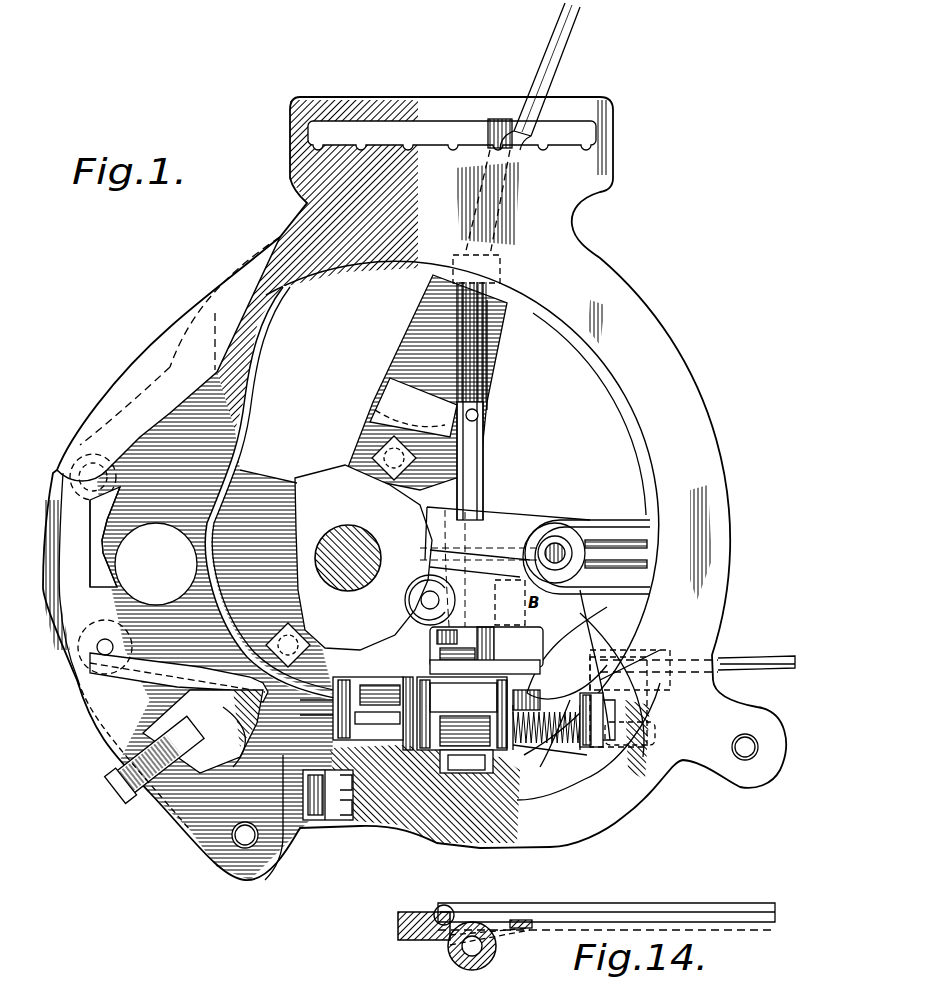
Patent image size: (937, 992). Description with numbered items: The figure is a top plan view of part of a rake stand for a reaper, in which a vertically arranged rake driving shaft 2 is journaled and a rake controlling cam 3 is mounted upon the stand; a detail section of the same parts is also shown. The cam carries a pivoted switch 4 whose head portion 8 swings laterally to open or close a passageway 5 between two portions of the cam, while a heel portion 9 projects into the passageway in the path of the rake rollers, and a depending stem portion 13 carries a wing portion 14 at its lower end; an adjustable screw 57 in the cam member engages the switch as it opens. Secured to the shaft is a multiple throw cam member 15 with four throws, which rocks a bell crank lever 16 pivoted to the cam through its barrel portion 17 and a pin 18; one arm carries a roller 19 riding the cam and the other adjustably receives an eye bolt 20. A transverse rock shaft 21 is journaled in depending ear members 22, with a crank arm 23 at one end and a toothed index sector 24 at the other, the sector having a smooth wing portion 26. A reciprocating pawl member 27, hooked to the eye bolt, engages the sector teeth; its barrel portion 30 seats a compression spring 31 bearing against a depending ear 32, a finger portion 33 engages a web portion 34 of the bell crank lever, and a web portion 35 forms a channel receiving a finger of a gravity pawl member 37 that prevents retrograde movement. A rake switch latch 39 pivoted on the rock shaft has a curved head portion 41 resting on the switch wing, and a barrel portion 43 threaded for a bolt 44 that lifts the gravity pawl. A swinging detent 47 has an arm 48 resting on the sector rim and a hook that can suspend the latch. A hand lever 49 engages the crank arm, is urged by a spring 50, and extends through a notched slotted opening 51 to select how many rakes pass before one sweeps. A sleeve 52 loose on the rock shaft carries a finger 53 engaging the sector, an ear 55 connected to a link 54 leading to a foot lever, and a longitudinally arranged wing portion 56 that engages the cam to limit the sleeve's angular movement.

In FIG. 1, the rake driving shaft 2 is at (338, 527).
In FIG. 1, the rake controlling cam 3 is at (705, 425).
In FIG. 1, the pivoted switch 4 is at (100, 690).
In FIG. 1, the passageway 5 is at (140, 635).
In FIG. 1, the head portion 8 is at (140, 690).
In FIG. 1, the heel portion 9 is at (103, 555).
In FIG. 1, the depending stem portion 13 is at (181, 703).
In FIG. 1, the wing portion 14 is at (204, 715).
In FIG. 1, the multiple throw cam member 15 is at (320, 490).
In FIG. 1, the bell crank lever 16 is at (598, 612).
In FIG. 1, the barrel portion 17 is at (599, 520).
In FIG. 1, the pin 18 is at (548, 525).
In FIG. 1, the roller 19 is at (408, 575).
In FIG. 1, the eye bolt 20 is at (668, 744).
In FIG. 1, the rock shaft 21 is at (484, 452).
In FIG. 14, the rock shaft 21 is at (462, 960).
In FIG. 1, the depending ear members 22 is at (520, 300).
In FIG. 1, the crank arm 23 is at (488, 132).
In FIG. 1, the toothed index sector 24 is at (440, 765).
In FIG. 1, the smooth wing portion 26 is at (600, 650).
In FIG. 1, the reciprocating pawl member 27 is at (430, 790).
In FIG. 1, the barrel portion 30 is at (400, 770).
In FIG. 1, the compression spring 31 is at (590, 720).
In FIG. 1, the depending ear 32 is at (605, 740).
In FIG. 1, the finger portion 33 is at (640, 700).
In FIG. 1, the web portion 34 is at (600, 690).
In FIG. 1, the web portion 35 is at (480, 686).
In FIG. 1, the gravity pawl member 37 is at (345, 625).
In FIG. 1, the rake switch latch 39 is at (290, 760).
In FIG. 1, the curved head portion 41 is at (195, 765).
In FIG. 1, the barrel portion 43 is at (352, 677).
In FIG. 1, the bolt 44 is at (365, 640).
In FIG. 1, the swinging detent 47 is at (330, 820).
In FIG. 1, the arm 48 is at (340, 820).
In FIG. 1, the hand lever 49 is at (570, 45).
In FIG. 1, the spring 50 is at (490, 390).
In FIG. 1, the slotted opening 51 is at (373, 128).
In FIG. 1, the sleeve 52 is at (500, 640).
In FIG. 14, the sleeve 52 is at (490, 955).
In FIG. 1, the finger 53 is at (462, 713).
In FIG. 14, the finger 53 is at (440, 935).
In FIG. 1, the link 54 is at (740, 656).
In FIG. 14, the link 54 is at (612, 905).
In FIG. 1, the laterally projecting ear 55 is at (407, 702).
In FIG. 14, the laterally projecting ear 55 is at (444, 905).
In FIG. 1, the longitudinally arranged wing portion 56 is at (470, 572).
In FIG. 1, the adjustable screw 57 is at (118, 792).